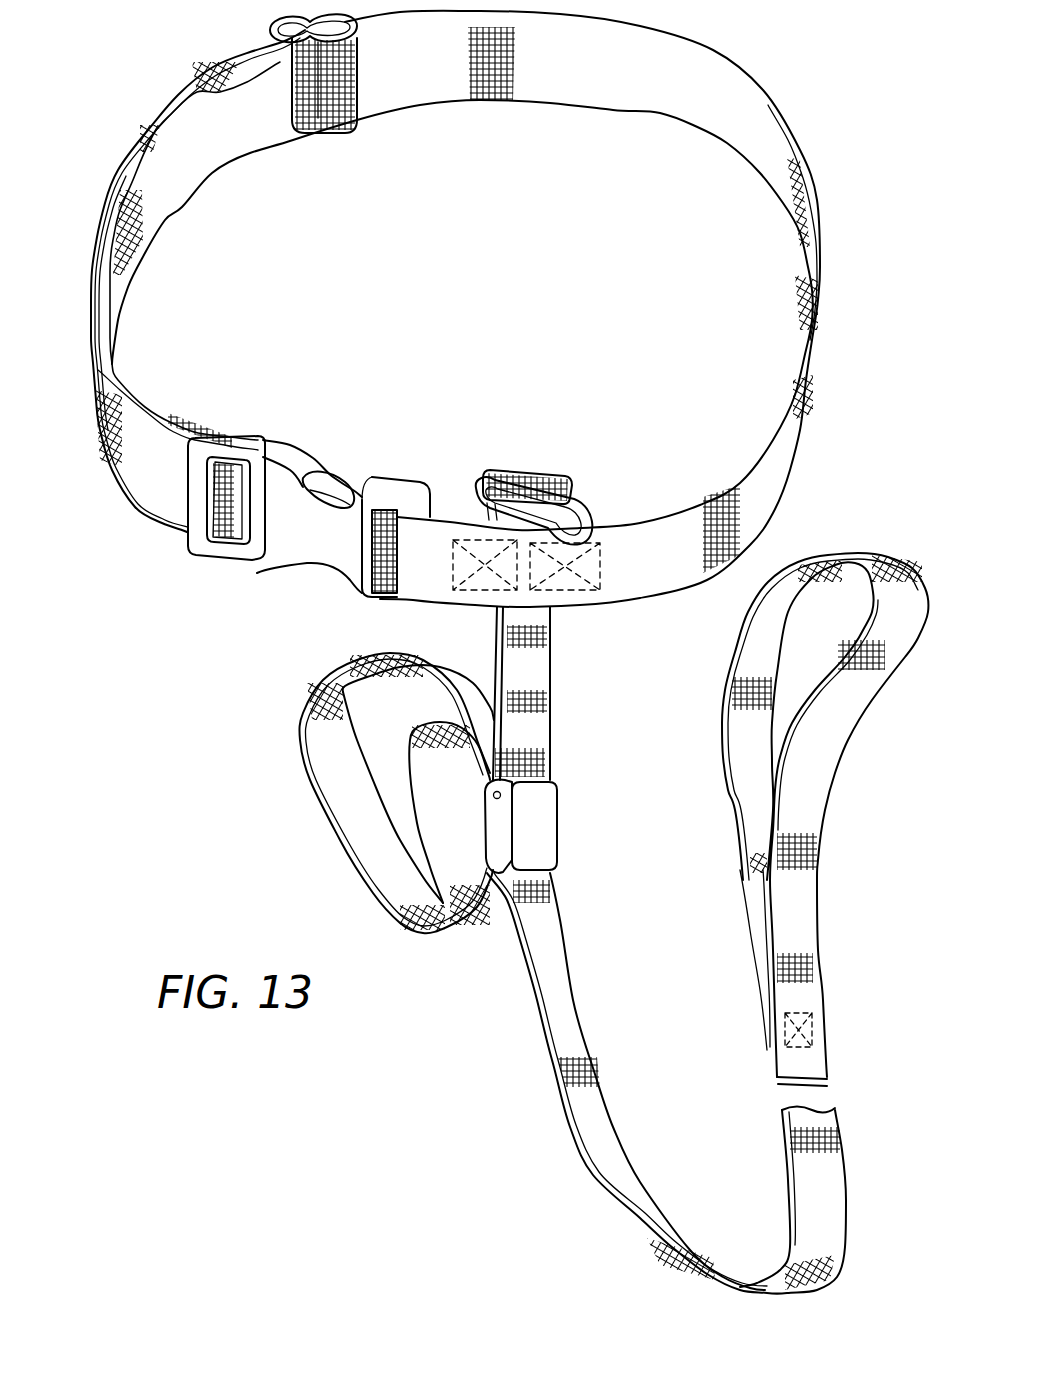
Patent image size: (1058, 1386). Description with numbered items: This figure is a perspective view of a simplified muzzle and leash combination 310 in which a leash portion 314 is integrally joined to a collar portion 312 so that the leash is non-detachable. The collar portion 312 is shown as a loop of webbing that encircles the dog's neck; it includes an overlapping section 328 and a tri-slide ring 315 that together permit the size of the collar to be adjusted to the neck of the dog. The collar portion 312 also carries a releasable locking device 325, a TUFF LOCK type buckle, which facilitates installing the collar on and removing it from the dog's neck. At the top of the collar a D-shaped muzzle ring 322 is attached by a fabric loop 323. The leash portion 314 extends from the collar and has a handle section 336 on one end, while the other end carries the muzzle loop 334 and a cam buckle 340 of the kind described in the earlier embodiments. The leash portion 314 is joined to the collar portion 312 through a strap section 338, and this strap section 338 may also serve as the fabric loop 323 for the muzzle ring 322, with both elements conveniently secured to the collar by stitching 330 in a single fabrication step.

The muzzle and leash combination 310 is at (178, 670).
The collar portion 312 is at (790, 113).
The leash portion 314 is at (533, 1030).
The tri-slide ring 315 is at (283, 30).
The muzzle ring 322 is at (587, 497).
The fabric loop 323 is at (527, 470).
The releasable locking device 325 is at (258, 575).
The overlapping section 328 is at (152, 390).
The stitching 330 is at (470, 578).
The muzzle loop 334 is at (363, 840).
The handle section 336 is at (837, 690).
The strap section 338 is at (530, 652).
The cam buckle 340 is at (543, 827).